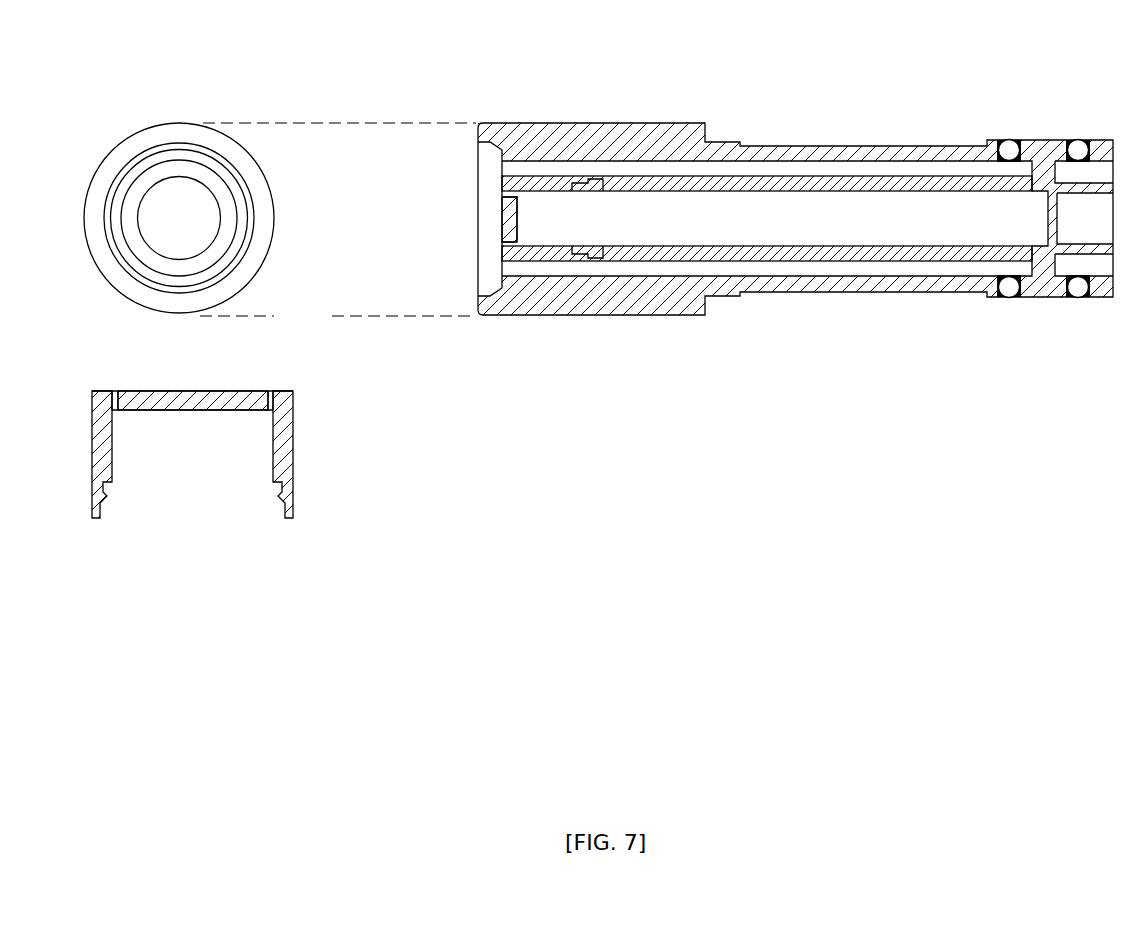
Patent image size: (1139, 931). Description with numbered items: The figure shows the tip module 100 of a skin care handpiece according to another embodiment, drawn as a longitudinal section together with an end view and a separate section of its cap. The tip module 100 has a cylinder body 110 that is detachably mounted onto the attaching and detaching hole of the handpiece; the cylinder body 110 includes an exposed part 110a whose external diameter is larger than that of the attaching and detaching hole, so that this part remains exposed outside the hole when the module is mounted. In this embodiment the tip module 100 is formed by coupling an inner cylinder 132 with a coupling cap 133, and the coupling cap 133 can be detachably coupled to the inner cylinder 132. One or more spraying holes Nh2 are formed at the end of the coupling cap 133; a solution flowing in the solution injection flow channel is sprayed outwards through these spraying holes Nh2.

The tip module 100 is at (795, 233).
The cylinder body 110 is at (795, 165).
The exposed part 110a is at (585, 130).
The inner cylinder 132 is at (655, 254).
The coupling cap 133 is at (134, 368).
The spraying holes Nh2 is at (503, 250).